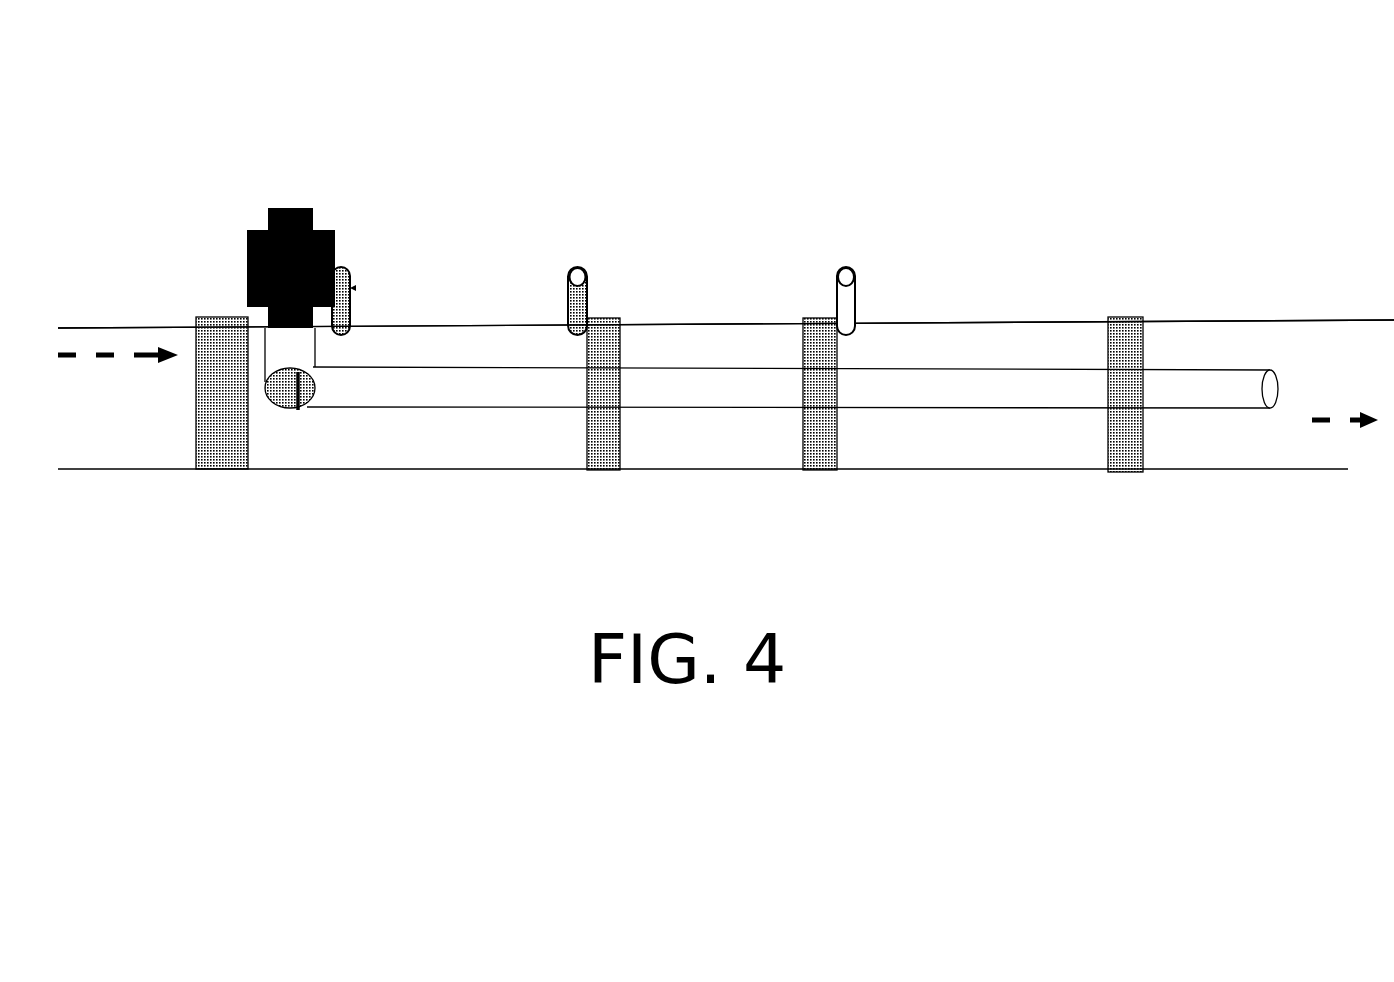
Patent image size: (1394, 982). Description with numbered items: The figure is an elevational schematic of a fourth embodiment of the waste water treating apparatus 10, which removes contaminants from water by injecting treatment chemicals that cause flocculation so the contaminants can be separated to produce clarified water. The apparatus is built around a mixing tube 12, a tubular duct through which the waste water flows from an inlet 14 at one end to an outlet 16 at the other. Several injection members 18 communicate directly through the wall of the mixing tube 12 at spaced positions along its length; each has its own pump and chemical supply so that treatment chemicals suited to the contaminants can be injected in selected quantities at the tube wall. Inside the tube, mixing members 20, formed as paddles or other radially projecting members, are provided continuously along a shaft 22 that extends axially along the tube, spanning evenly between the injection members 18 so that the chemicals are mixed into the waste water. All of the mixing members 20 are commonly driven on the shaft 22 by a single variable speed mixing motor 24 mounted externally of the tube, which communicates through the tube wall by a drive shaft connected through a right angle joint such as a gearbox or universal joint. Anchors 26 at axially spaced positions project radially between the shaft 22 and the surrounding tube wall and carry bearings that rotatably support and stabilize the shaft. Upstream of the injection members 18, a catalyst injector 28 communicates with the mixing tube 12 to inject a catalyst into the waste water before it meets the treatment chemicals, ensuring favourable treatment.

The waste water treating apparatus 10 is at (989, 132).
The mixing tube 12 is at (1188, 470).
The inlet 14 is at (140, 453).
The outlet 16 is at (1318, 342).
The injection members 18 is at (580, 273).
The mixing members 20 is at (497, 447).
The shaft 22 is at (456, 386).
The variable speed mixing motor 24 is at (303, 208).
The anchors 26 is at (1128, 335).
The catalyst injector 28 is at (190, 325).